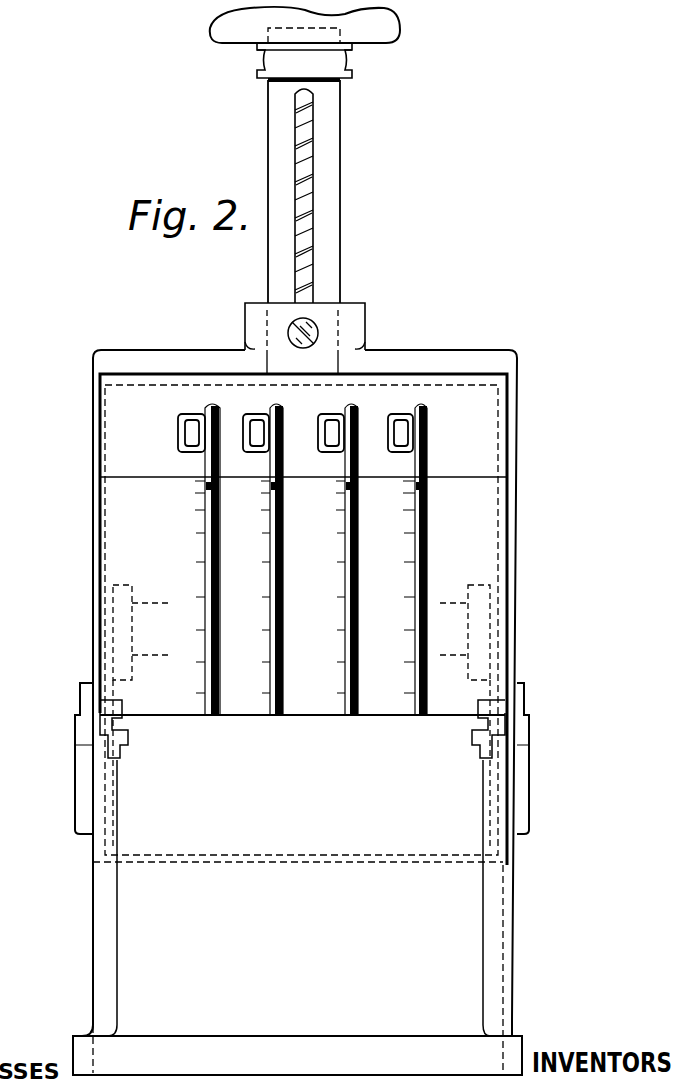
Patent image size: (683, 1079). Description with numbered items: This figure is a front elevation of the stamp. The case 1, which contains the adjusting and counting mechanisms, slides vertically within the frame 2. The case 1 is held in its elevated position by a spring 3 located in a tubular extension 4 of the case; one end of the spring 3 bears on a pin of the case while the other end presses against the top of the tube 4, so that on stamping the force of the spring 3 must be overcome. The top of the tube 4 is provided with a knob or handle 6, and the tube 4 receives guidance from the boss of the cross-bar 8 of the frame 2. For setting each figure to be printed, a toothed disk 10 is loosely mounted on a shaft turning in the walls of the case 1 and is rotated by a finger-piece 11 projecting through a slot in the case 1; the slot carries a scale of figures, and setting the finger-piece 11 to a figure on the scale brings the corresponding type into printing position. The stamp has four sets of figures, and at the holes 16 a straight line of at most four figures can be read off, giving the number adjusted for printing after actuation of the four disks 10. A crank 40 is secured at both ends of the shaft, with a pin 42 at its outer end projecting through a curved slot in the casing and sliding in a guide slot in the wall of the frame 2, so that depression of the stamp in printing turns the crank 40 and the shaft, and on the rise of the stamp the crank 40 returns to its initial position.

The case 1 is at (300, 619).
The frame 2 is at (443, 1052).
The spring 3 is at (312, 200).
The tubular extension 4 is at (338, 143).
The knob or handle 6 is at (372, 30).
The cross-bar 8 is at (168, 357).
The toothed disk 10 is at (425, 557).
The finger-piece 11 is at (428, 440).
The holes 16 is at (402, 414).
The crank 40 is at (128, 716).
The pin 42 is at (75, 741).